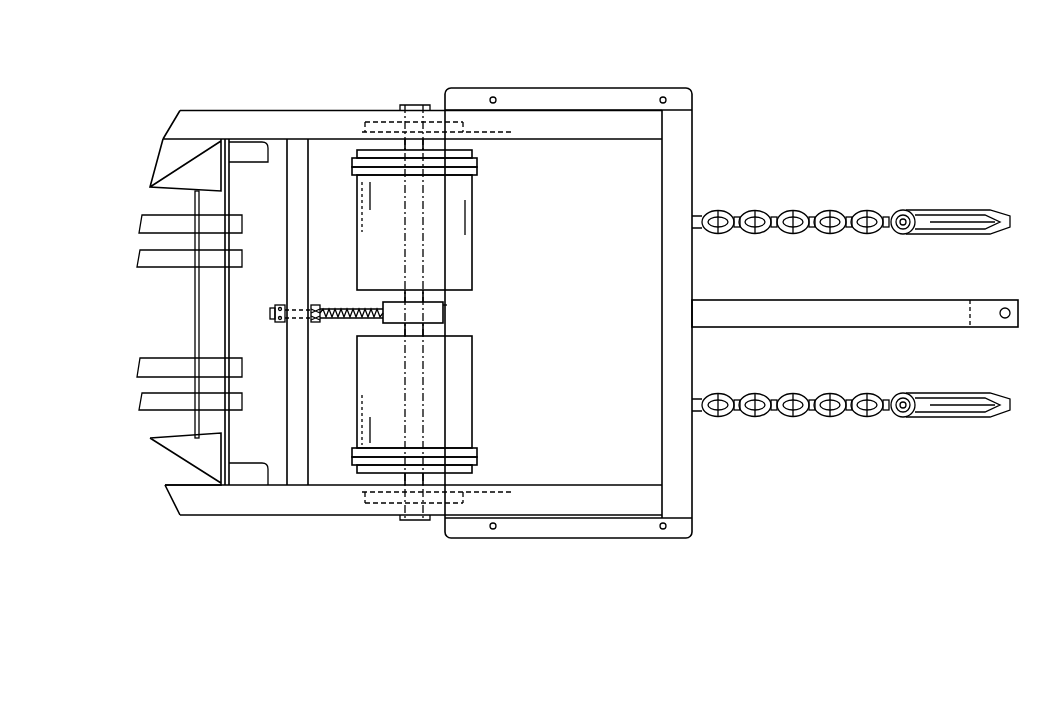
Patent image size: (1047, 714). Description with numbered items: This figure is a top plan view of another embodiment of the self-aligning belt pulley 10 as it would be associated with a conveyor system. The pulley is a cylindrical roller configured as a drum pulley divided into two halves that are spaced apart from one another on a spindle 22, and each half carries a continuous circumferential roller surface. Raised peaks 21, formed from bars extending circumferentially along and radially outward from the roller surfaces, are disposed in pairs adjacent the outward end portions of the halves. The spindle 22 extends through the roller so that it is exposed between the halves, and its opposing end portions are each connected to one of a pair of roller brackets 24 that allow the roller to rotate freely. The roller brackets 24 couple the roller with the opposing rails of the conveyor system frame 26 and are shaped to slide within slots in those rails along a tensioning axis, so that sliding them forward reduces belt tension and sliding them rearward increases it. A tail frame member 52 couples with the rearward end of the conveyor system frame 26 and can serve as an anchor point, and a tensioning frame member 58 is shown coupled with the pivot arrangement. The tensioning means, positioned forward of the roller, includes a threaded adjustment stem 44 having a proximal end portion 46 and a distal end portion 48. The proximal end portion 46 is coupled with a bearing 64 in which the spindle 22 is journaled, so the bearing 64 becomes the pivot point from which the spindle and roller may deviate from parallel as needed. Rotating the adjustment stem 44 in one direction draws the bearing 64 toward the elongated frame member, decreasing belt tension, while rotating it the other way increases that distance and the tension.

The self-aligning belt pulley 10 is at (843, 78).
The raised peaks 21 is at (477, 168).
The spindle 22 is at (445, 322).
The roller brackets 24 is at (397, 505).
The conveyor system frame 26 is at (213, 108).
The adjustment stem 44 is at (326, 307).
The proximal end portion 46 is at (383, 321).
The distal end portion 48 is at (272, 304).
The tail frame member 52 is at (680, 174).
The tensioning frame member 58 is at (308, 418).
The bearing 64 is at (445, 302).